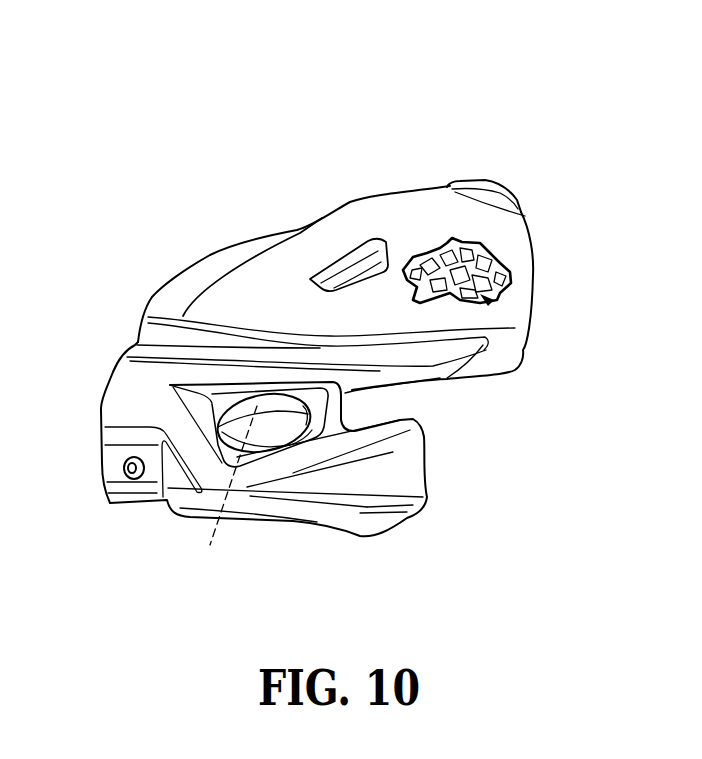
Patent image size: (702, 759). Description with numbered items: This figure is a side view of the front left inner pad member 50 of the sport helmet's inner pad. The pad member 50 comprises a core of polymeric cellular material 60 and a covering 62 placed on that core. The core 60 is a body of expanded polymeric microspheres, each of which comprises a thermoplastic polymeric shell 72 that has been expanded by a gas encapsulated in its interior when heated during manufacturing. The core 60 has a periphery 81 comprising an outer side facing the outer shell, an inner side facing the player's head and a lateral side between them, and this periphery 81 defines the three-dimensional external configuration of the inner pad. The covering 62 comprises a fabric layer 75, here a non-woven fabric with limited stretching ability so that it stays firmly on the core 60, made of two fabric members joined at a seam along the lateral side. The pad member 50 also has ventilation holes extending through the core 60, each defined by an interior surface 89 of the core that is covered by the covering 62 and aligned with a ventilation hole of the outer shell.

The front left inner pad member 50 is at (211, 86).
The core of polymeric cellular material 60 is at (480, 293).
The covering 62 is at (127, 394).
The polymeric shell 72 is at (477, 257).
The fabric layer 75 is at (317, 237).
The periphery 81 is at (450, 267).
The interior surface 89 is at (226, 497).